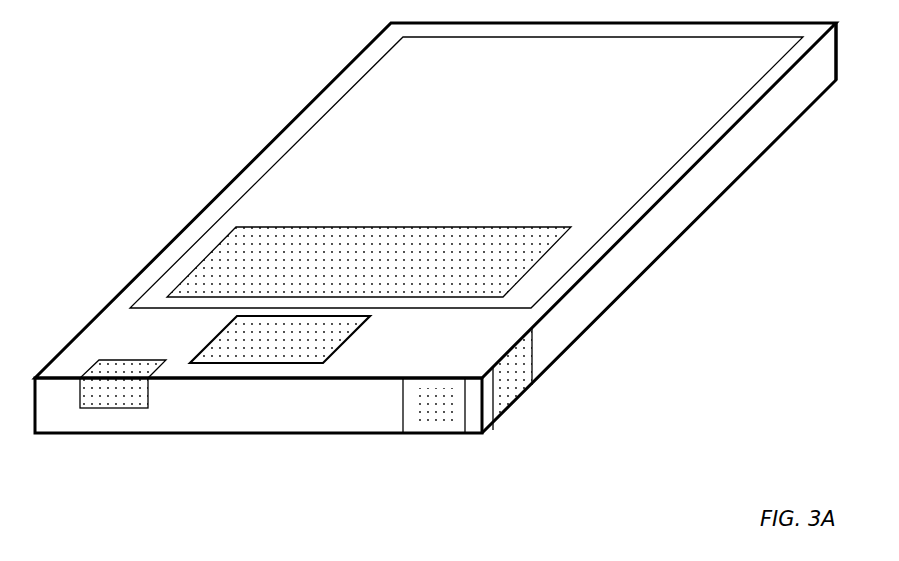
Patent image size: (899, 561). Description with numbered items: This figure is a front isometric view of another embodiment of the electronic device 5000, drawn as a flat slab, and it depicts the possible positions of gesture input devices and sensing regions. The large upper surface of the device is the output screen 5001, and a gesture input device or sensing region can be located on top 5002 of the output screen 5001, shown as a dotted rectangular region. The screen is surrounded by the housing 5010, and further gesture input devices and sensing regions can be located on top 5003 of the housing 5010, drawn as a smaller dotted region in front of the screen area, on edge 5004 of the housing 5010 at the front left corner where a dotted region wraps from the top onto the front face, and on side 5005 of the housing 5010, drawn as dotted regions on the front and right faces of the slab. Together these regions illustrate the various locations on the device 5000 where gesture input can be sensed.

The electronic device 5000 is at (779, 112).
The output screen 5001 is at (318, 145).
The top of output screen 5002 is at (230, 258).
The top of housing 5003 is at (237, 338).
The edge of housing 5004 is at (130, 395).
The side of housing 5005 is at (517, 392).
The housing 5010 is at (708, 178).